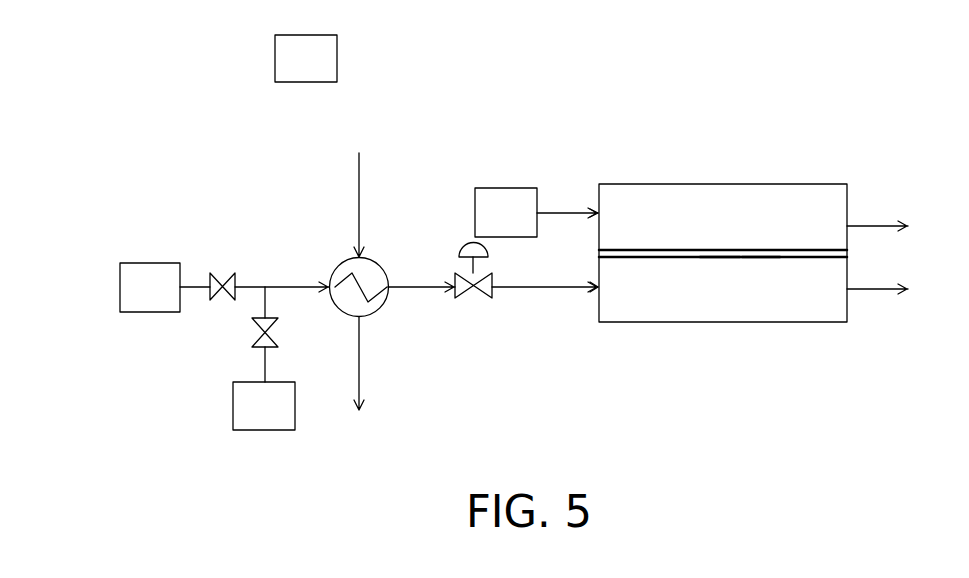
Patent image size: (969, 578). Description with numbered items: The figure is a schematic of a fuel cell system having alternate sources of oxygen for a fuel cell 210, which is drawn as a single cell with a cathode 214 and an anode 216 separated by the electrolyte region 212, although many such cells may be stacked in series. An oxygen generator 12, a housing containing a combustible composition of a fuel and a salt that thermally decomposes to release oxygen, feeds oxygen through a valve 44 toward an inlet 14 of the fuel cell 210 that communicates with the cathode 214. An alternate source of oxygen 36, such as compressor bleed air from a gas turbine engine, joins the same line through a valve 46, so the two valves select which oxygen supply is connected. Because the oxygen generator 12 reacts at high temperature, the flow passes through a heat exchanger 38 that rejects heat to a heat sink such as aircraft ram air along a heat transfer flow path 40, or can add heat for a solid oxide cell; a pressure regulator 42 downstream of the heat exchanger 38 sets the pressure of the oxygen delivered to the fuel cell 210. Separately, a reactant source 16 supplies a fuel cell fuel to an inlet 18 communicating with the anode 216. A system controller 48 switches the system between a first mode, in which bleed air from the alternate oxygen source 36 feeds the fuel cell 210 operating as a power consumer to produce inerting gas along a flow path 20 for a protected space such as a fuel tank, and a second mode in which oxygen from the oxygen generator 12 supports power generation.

The oxygen generator 12 is at (120, 289).
The inlet 14 is at (598, 291).
The reactant source 16 is at (507, 188).
The inlet 18 is at (598, 210).
The flow path 20 is at (873, 290).
The alternate source of oxygen 36 is at (233, 410).
The heat exchanger 38 is at (337, 265).
The heat transfer flow path 40 is at (360, 196).
The pressure regulator 42 is at (473, 300).
The valve 44 is at (222, 273).
The valve 46 is at (252, 333).
The system controller 48 is at (337, 60).
The fuel cell 210 is at (697, 184).
The first membrane layer 212 is at (722, 257).
The cathode 214 is at (752, 257).
The anode 216 is at (767, 250).